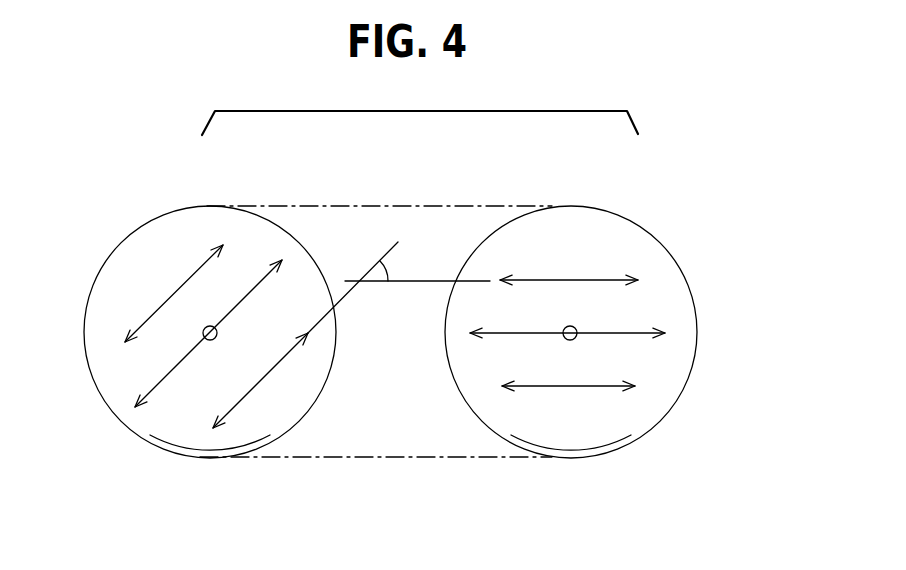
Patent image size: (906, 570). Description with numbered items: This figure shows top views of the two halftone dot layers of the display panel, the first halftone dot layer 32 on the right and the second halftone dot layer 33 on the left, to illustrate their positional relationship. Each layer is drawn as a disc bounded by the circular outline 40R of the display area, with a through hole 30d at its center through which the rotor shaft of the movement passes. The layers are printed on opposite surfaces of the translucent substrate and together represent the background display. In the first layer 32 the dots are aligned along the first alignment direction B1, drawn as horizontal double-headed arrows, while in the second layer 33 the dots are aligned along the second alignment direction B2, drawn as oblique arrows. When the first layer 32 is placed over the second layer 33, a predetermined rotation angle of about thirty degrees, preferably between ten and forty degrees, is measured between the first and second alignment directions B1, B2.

The circular outline 40R is at (158, 209).
The through hole 30d is at (203, 339).
The second alignment direction B2 is at (276, 360).
The first alignment direction B1 is at (593, 385).
The second halftone dot layer 33 is at (203, 459).
The first halftone dot layer 32 is at (563, 459).